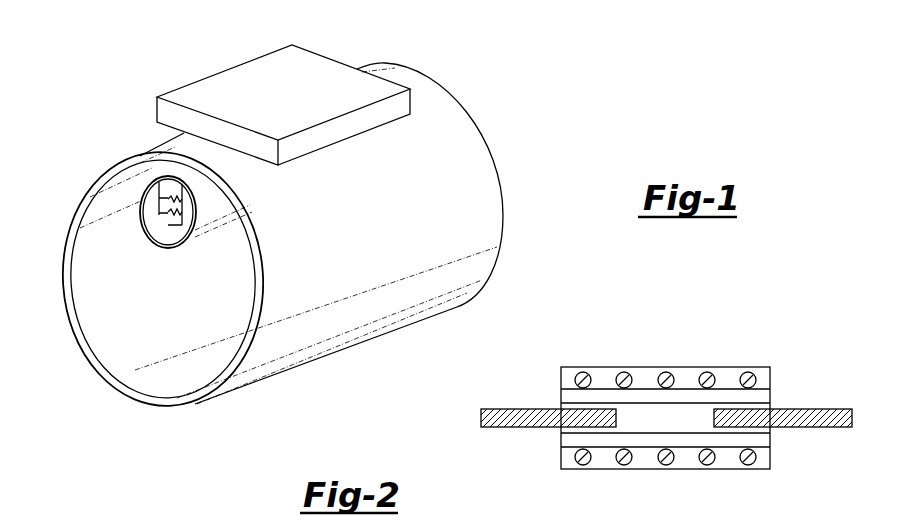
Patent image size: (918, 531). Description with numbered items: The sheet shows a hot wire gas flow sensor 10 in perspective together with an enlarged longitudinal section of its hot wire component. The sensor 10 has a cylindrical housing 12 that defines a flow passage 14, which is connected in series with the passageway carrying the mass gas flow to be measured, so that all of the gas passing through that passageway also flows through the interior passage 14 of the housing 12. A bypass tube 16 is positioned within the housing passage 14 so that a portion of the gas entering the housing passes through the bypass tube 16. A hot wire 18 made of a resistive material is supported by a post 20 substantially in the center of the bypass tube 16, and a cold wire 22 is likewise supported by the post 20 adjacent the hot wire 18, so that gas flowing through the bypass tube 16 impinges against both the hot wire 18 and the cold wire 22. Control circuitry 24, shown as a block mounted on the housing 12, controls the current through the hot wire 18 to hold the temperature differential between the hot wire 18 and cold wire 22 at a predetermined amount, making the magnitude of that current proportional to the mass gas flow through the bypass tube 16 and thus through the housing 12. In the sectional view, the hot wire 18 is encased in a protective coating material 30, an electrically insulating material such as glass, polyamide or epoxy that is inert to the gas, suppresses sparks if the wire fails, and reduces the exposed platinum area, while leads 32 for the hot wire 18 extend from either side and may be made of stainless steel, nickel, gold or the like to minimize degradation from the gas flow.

In FIG. 1, the hot wire gas flow sensor 10 is at (52, 340).
In FIG. 1, the housing 12 is at (487, 212).
In FIG. 1, the flow passage 14 is at (130, 355).
In FIG. 1, the bypass tube 16 is at (208, 228).
In FIG. 1, the hot wire 18 is at (172, 218).
In FIG. 2, the hot wire 18 is at (748, 463).
In FIG. 1, the post 20 is at (185, 192).
In FIG. 1, the cold wire 22 is at (152, 203).
In FIG. 1, the control circuitry 24 is at (313, 60).
In FIG. 2, the protective coating material 30 is at (648, 462).
In FIG. 2, the leads 32 is at (501, 419).